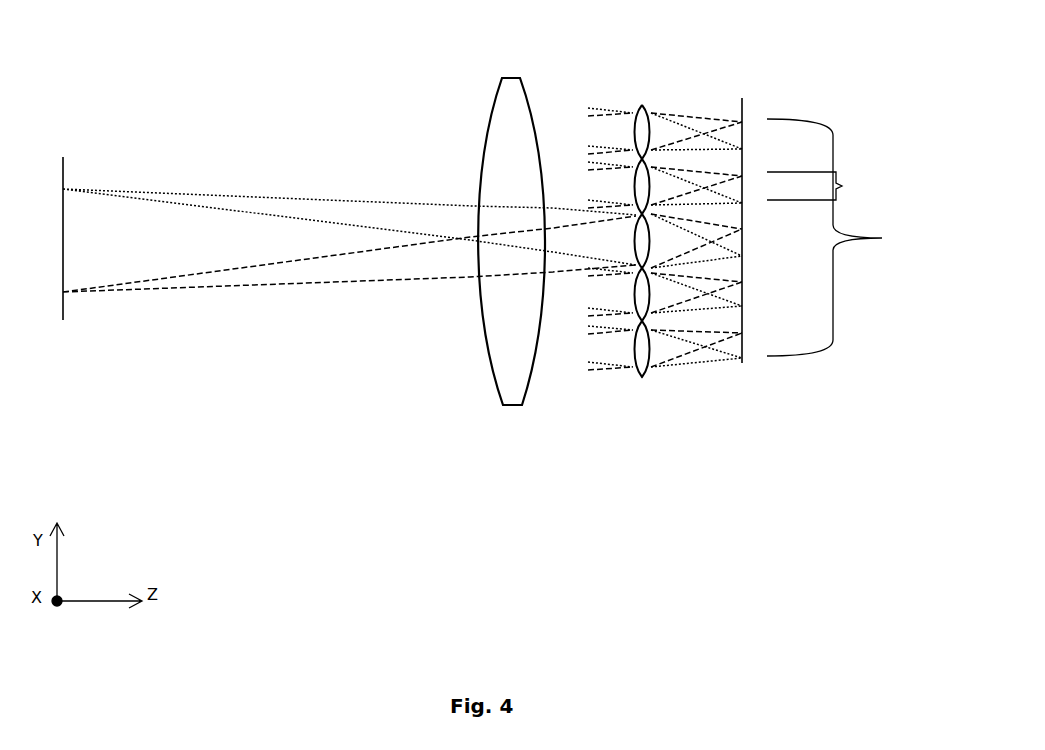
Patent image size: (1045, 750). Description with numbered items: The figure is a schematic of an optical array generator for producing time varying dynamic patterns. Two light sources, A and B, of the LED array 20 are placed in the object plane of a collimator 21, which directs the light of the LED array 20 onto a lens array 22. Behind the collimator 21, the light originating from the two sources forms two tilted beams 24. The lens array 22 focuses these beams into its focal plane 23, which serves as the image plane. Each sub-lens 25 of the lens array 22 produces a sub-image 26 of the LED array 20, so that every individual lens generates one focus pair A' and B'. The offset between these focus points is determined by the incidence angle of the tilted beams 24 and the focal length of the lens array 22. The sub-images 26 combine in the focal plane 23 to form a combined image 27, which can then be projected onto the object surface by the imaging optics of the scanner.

The LED array 20 is at (63, 147).
The collimator 21 is at (502, 93).
The lens array 22 is at (639, 229).
The focal plane 23 is at (740, 90).
The tilted beams 24 is at (577, 219).
The sub-lens 25 is at (640, 345).
The sub-image 26 is at (842, 186).
The combined image 27 is at (882, 238).